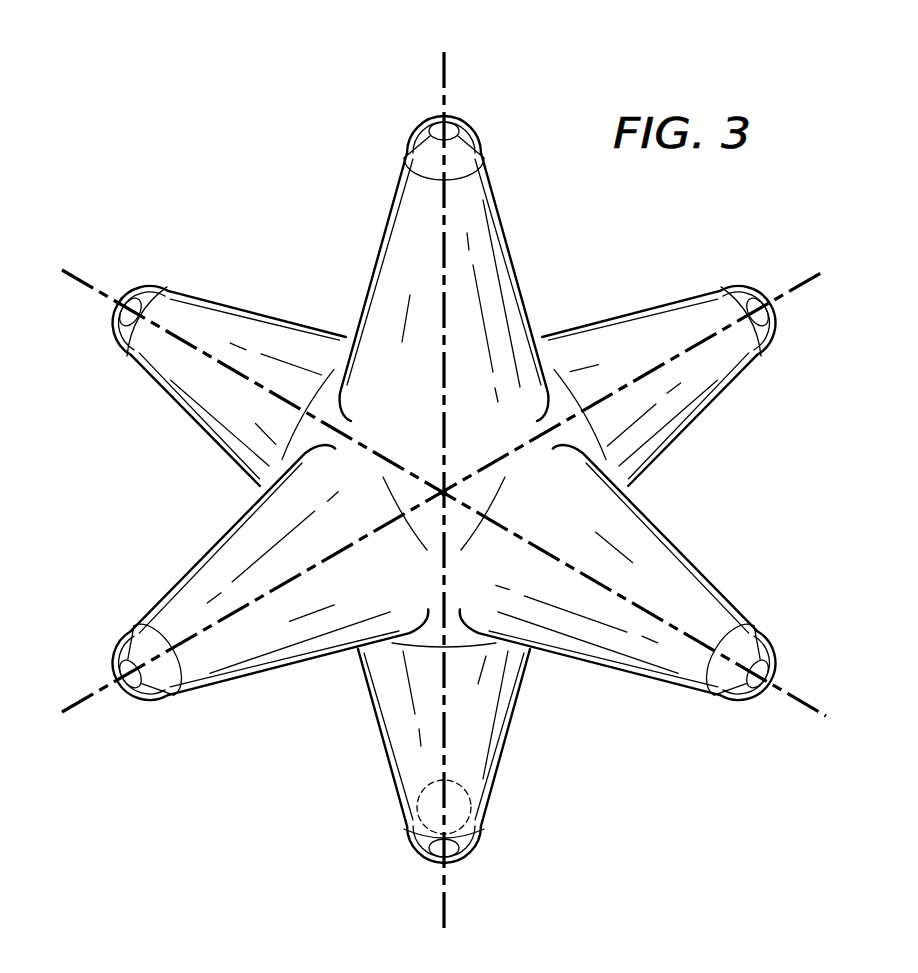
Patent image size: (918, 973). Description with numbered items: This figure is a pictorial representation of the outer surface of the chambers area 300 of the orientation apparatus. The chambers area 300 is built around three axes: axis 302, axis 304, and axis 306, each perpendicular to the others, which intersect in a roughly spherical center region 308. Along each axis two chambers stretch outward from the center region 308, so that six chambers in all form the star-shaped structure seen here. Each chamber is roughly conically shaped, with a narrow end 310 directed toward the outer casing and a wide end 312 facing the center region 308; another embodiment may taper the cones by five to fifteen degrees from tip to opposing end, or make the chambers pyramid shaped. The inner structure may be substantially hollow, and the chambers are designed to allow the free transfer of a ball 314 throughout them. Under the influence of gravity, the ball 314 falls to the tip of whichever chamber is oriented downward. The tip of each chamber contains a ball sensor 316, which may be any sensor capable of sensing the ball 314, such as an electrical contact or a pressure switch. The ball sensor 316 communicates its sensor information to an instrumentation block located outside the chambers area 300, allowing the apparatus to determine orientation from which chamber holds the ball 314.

The chambers area 300 is at (243, 118).
The axis 302 is at (447, 84).
The axis 304 is at (87, 286).
The axis 306 is at (84, 695).
The center region 308 is at (434, 476).
The narrow end 310 is at (428, 126).
The wide end 312 is at (378, 265).
The ball 314 is at (470, 789).
The ball sensor 316 is at (412, 851).